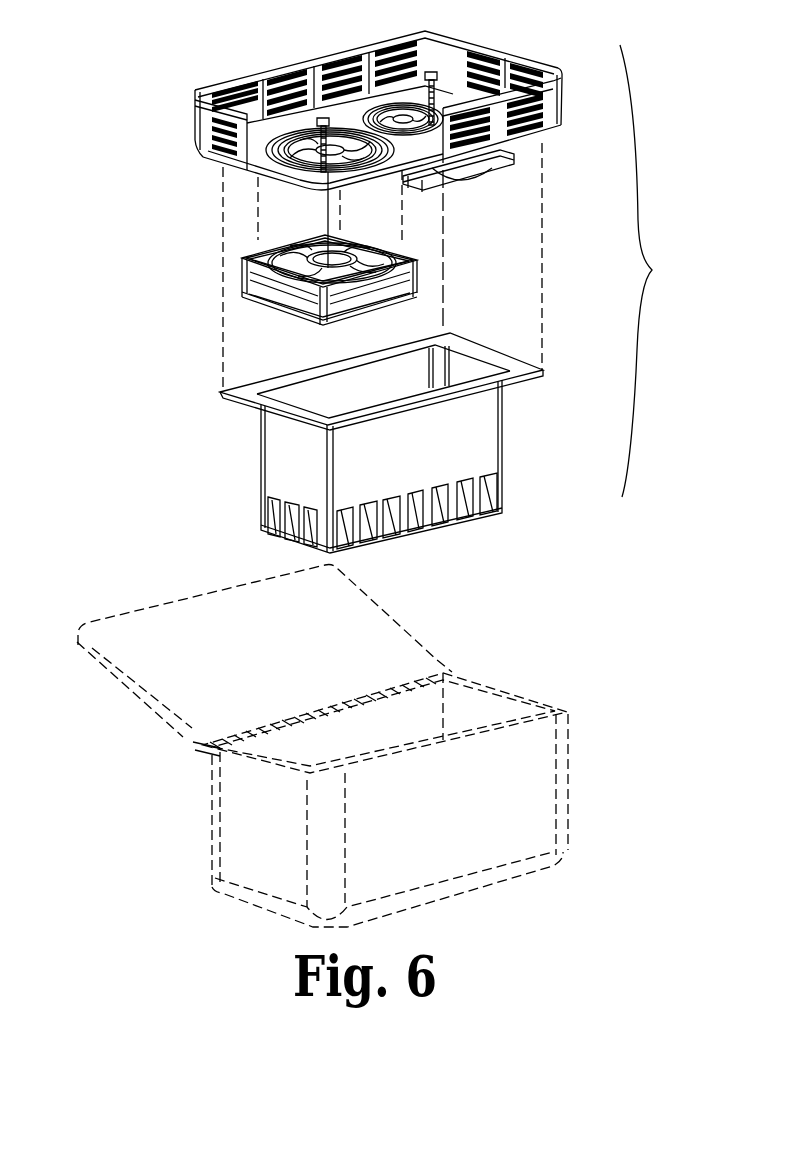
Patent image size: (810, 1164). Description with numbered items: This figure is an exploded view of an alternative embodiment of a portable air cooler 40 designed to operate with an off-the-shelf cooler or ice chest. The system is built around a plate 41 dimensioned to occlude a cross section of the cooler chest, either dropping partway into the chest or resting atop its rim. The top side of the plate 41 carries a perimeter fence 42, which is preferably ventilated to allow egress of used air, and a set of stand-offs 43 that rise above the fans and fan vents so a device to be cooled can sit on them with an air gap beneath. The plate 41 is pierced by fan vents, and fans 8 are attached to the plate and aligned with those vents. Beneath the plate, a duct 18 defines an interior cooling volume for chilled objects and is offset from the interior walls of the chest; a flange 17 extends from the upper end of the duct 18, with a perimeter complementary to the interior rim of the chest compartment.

The portable air cooler 40 is at (663, 271).
The perimeter fence 42 is at (195, 120).
The stand-offs 43 is at (423, 74).
The plate 41 is at (302, 172).
The fan 8 is at (494, 168).
The flange 17 is at (240, 397).
The duct 18 is at (255, 475).